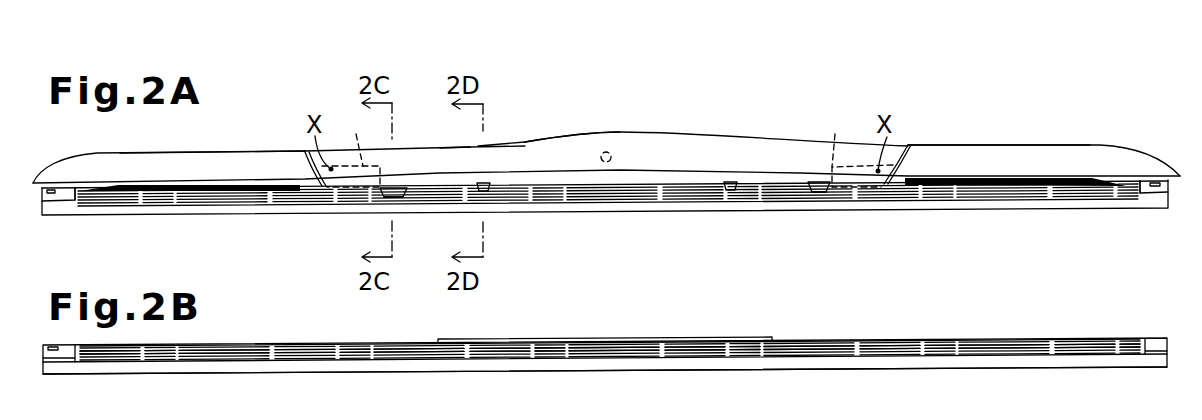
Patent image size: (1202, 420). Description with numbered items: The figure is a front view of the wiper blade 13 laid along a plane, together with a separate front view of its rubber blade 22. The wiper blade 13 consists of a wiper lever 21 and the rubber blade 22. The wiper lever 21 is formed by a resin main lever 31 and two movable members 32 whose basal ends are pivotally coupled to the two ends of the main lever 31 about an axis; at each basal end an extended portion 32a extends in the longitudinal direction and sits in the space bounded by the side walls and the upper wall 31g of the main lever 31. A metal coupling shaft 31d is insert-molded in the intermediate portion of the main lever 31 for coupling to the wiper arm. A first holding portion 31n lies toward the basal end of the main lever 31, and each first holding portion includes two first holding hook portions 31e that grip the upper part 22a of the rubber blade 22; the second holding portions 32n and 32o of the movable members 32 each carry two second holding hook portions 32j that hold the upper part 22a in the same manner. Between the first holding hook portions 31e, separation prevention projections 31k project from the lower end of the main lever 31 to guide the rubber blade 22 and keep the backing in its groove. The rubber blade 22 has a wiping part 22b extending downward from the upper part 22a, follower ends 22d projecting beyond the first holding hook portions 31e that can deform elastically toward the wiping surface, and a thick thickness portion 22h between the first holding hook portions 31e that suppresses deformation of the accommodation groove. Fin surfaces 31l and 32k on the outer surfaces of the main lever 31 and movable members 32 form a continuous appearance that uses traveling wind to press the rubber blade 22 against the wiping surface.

In FIG. 2A, the wiper blade 13 is at (798, 116).
In FIG. 2A, the wiper lever 21 is at (686, 124).
In FIG. 2B, the wiper lever 21 is at (610, 382).
In FIG. 2A, the rubber blade 22 is at (612, 213).
In FIG. 2B, the rubber blade 22 is at (572, 370).
In FIG. 2B, the upper part 22a is at (246, 343).
In FIG. 2B, the wiping part 22b is at (204, 368).
In FIG. 2A, the follower end 22d is at (222, 214).
In FIG. 2B, the thick thickness portion 22h is at (667, 338).
In FIG. 2A, the main lever 31 is at (735, 147).
In FIG. 2A, the coupling shaft 31d is at (606, 151).
In FIG. 2A, the first holding hook portion 31e is at (383, 192).
In FIG. 2B, the upper wall 31g is at (610, 383).
In FIG. 2A, the separation prevention projection 31k is at (487, 193).
In FIG. 2A, the fin surface 31l is at (431, 157).
In FIG. 2A, the first holding portion 31n is at (351, 226).
In FIG. 2A, the movable member 32 is at (183, 158).
In FIG. 2A, the extended portion 32a is at (607, 147).
In FIG. 2A, the second holding hook portion 32j is at (82, 191).
In FIG. 2A, the fin surface 32k is at (262, 158).
In FIG. 2A, the second holding portion 32n is at (121, 223).
In FIG. 2A, the second holding portion 32o is at (1132, 230).